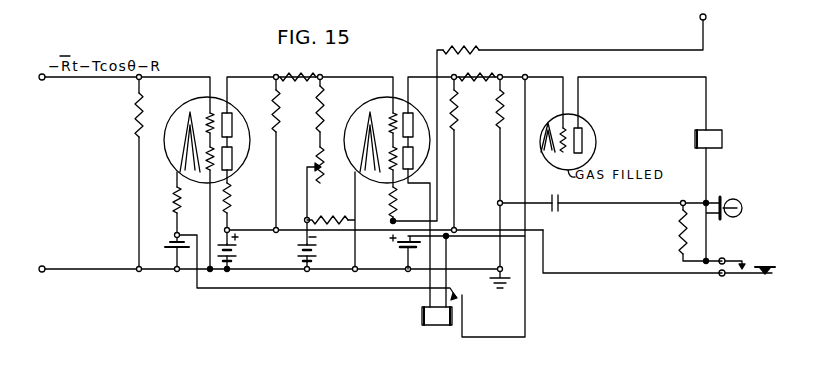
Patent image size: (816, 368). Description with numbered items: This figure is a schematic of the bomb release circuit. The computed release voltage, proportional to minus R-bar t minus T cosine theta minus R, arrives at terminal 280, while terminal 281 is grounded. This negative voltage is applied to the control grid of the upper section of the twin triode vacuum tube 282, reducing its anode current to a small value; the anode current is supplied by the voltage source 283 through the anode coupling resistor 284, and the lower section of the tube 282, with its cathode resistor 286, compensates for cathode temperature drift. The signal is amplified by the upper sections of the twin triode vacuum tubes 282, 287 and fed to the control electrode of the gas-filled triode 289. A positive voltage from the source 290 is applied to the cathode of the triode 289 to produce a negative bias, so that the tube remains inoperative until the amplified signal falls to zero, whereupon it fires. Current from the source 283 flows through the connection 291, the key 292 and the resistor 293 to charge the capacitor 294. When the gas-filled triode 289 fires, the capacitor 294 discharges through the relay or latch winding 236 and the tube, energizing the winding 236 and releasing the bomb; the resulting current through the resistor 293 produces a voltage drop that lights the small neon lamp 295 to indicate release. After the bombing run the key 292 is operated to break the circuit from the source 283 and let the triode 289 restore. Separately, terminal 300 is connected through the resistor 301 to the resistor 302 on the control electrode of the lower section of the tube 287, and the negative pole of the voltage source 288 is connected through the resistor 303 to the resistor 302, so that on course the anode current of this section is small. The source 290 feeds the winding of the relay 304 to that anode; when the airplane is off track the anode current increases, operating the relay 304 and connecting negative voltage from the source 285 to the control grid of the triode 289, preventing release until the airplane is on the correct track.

The relay or latch winding 236 is at (724, 138).
The terminal 280 is at (43, 80).
The terminal 281 is at (43, 272).
The twin triode vacuum tube 282 is at (237, 166).
The voltage source 283 is at (238, 255).
The anode coupling resistor 284 is at (268, 110).
The source 285 is at (169, 241).
The resistor 286 is at (172, 194).
The twin triode vacuum tube 287 is at (375, 106).
The voltage source 288 is at (313, 257).
The gas-filled triode 289 is at (588, 140).
The source 290 is at (399, 247).
The connection 291 is at (546, 253).
The key 292 is at (735, 277).
The resistor 293 is at (680, 238).
The capacitor 294 is at (558, 212).
The neon lamp 295 is at (736, 200).
The terminal 300 is at (705, 20).
The resistor 301 is at (461, 47).
The resistor 302 is at (393, 212).
The resistor 303 is at (334, 199).
The relay 304 is at (437, 326).